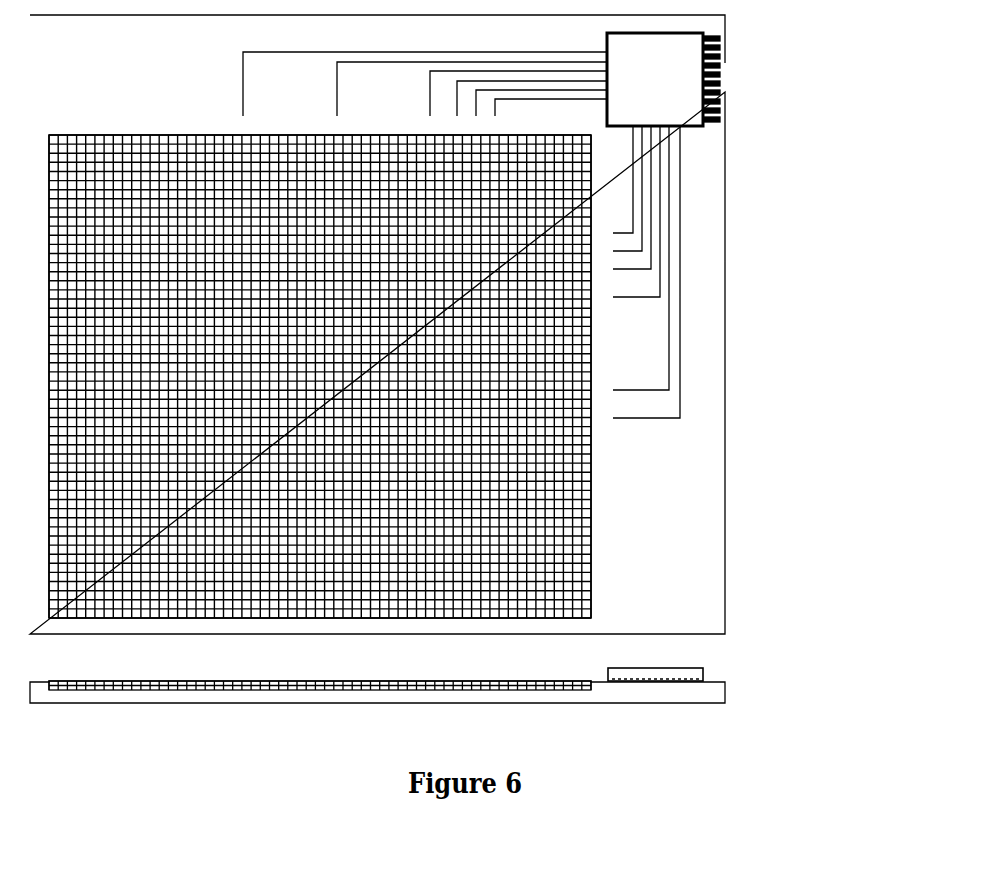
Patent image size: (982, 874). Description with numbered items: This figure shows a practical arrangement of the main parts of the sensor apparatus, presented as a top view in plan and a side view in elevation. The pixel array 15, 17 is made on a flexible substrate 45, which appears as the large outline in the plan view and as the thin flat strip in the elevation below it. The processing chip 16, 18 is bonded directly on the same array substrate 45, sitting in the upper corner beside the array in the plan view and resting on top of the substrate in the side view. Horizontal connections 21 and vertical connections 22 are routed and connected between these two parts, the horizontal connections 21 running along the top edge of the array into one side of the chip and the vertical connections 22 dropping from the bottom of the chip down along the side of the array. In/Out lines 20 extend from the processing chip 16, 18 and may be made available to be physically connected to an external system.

The pixel array 15 is at (467, 376).
The pixel array 17 is at (591, 533).
The processing chip 16 is at (456, 324).
The processing chip 18 is at (695, 128).
The In/Out lines 20 is at (722, 73).
The horizontal connections 21 is at (425, 84).
The vertical connections 22 is at (646, 272).
The substrate 45 is at (713, 587).